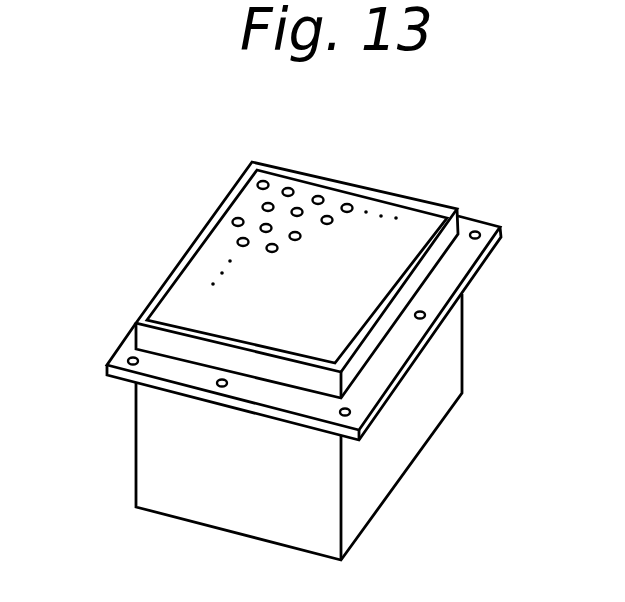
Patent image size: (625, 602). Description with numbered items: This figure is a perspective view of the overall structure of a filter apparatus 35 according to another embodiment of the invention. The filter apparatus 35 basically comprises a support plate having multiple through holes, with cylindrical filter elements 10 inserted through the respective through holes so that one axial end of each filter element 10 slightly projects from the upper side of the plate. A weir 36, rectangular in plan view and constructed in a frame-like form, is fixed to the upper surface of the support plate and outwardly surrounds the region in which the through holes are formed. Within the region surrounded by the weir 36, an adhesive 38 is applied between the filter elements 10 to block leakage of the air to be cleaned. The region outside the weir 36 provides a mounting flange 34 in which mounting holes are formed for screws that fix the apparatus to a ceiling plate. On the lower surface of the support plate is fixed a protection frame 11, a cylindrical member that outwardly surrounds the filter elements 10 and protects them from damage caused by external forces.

The filter element 10 is at (265, 181).
The protection frame 11 is at (152, 450).
The mounting flange 34 is at (280, 397).
The filter apparatus 35 is at (188, 198).
The weir 36 is at (163, 287).
The adhesive 38 is at (422, 223).